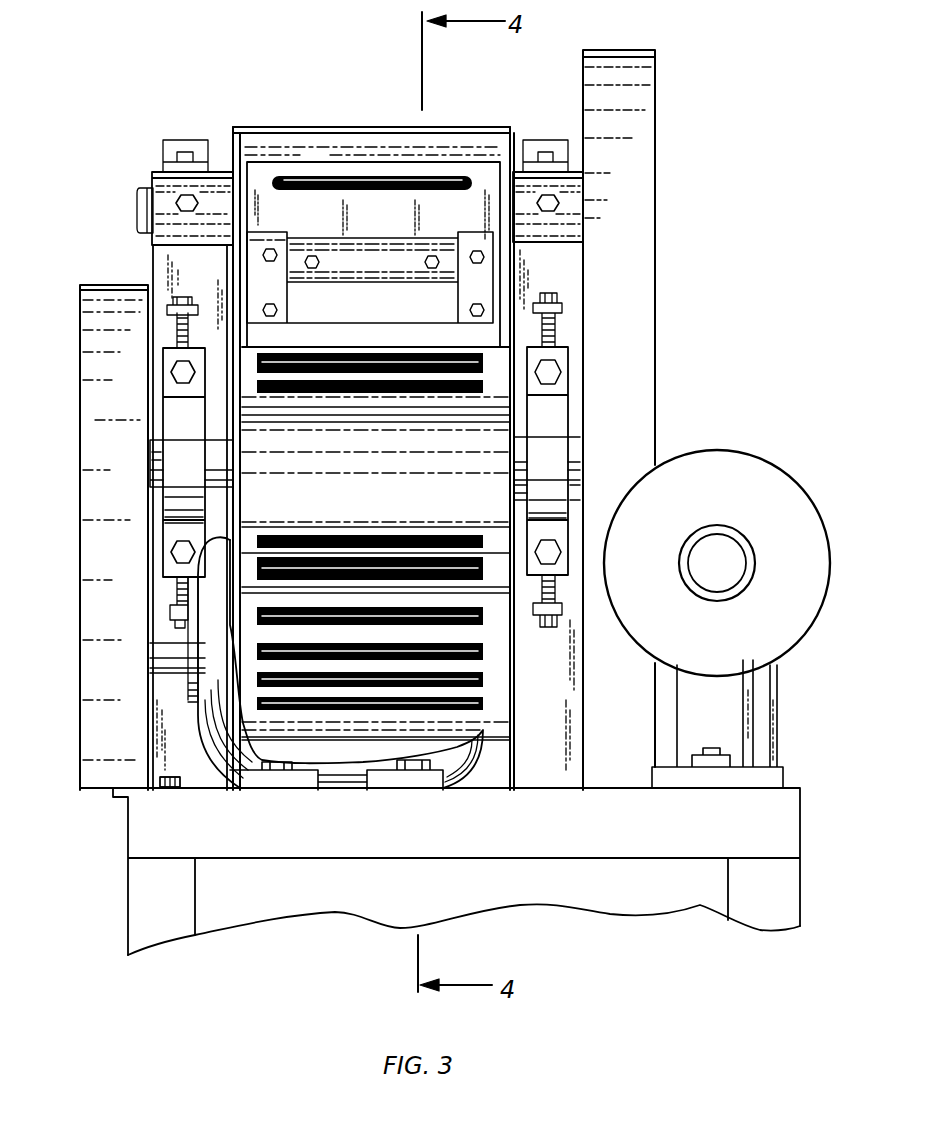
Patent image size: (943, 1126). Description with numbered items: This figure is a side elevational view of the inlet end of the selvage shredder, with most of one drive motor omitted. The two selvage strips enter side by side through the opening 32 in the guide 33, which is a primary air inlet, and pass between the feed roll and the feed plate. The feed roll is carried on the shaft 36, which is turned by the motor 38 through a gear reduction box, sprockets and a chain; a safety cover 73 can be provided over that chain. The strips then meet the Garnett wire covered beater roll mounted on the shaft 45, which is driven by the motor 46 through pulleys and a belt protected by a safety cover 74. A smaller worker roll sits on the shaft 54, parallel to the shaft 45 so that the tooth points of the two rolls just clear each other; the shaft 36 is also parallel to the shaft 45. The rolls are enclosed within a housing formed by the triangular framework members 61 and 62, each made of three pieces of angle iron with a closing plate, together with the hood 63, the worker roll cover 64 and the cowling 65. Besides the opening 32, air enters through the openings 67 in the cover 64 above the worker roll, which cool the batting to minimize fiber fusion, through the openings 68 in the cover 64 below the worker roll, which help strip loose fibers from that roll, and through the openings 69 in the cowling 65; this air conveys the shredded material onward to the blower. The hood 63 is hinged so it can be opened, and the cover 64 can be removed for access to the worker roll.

The opening 32 is at (310, 178).
The guide 33 is at (255, 178).
The shaft 36 is at (140, 208).
The motor 38 is at (748, 452).
The shaft 45 is at (150, 398).
The motor 46 is at (207, 782).
The shaft 54 is at (220, 440).
The triangular framework member 61 is at (153, 268).
The triangular framework member 62 is at (515, 170).
The hood 63 is at (347, 127).
The worker roll cover 64 is at (493, 462).
The cowling 65 is at (500, 657).
The openings 67 is at (483, 365).
The openings 68 is at (484, 546).
The openings 69 is at (483, 620).
The safety cover 73 is at (657, 160).
The safety cover 74 is at (78, 440).